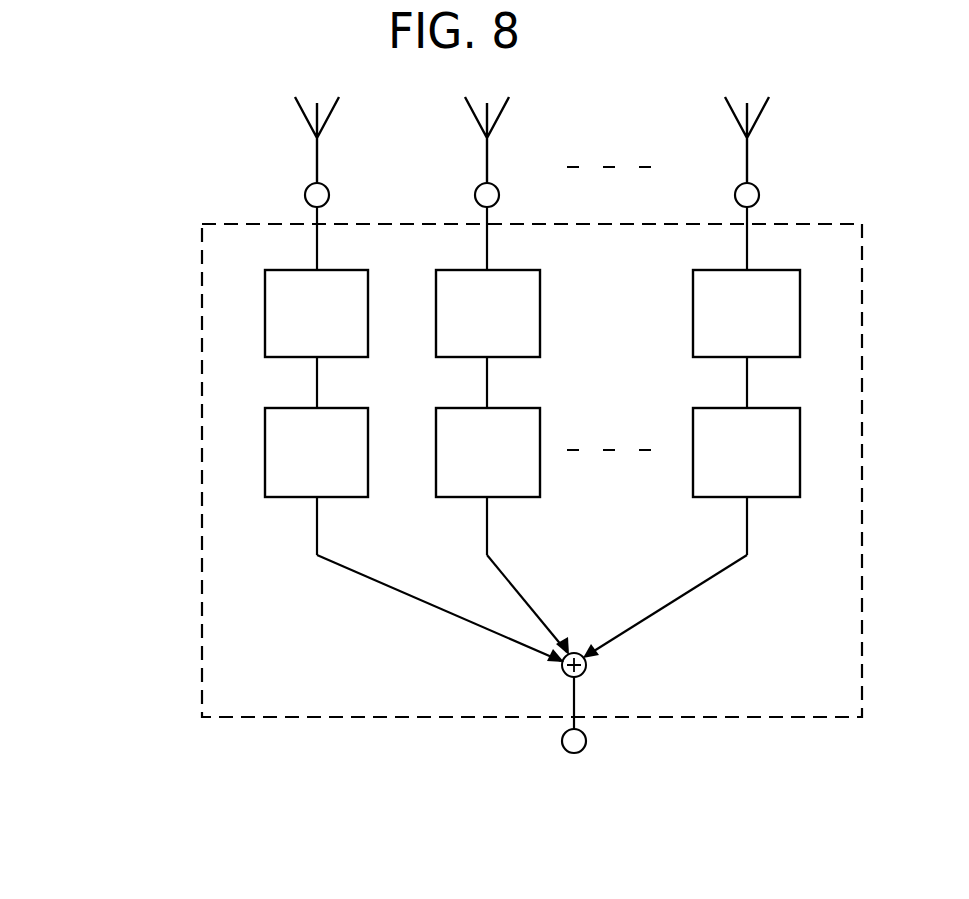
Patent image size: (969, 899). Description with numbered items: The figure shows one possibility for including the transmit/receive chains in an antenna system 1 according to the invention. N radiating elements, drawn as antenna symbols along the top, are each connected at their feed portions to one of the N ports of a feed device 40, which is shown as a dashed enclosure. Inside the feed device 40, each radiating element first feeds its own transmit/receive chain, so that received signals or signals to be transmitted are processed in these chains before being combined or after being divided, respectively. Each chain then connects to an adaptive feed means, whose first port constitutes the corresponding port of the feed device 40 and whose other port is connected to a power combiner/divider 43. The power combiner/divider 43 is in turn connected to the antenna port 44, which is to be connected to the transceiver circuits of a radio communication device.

The antenna system 1 is at (132, 229).
The feed device 40 is at (202, 492).
The power combiner/divider 43 is at (587, 668).
The antenna port 44 is at (587, 742).